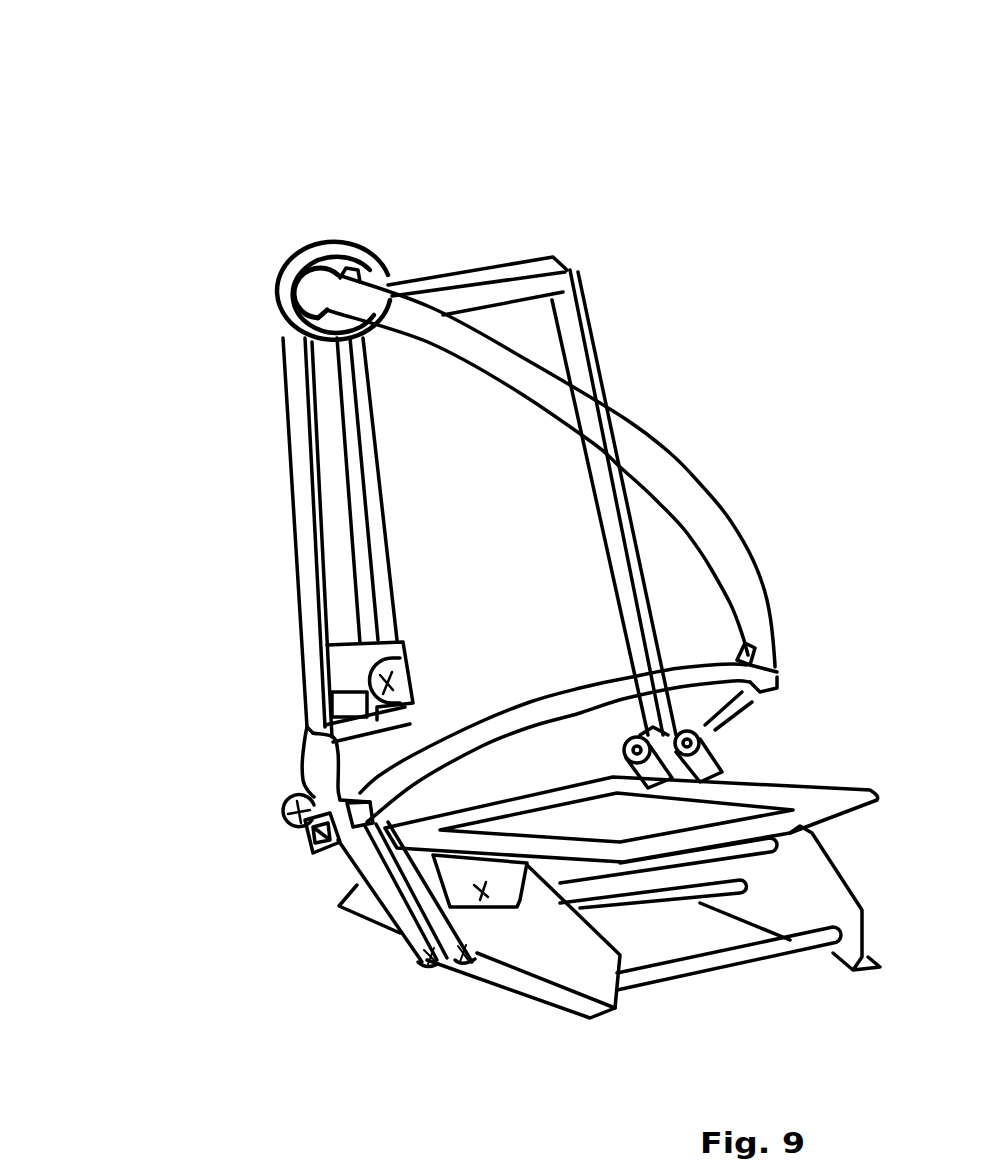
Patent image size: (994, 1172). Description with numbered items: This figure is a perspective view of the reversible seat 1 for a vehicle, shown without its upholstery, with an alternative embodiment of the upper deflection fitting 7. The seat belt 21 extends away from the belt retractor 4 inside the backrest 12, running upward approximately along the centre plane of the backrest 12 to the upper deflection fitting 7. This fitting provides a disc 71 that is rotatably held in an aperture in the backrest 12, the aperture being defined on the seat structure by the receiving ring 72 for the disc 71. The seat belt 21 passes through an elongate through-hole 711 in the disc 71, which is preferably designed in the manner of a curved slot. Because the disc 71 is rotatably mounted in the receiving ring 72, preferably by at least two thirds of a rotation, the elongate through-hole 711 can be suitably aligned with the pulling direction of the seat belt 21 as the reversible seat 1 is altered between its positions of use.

The reversible seat 1 is at (445, 78).
The backrest 12 is at (630, 375).
The seat belt 21 is at (528, 380).
The upper deflection fitting 7 is at (130, 215).
The disc 71 is at (305, 280).
The receiving ring 72 is at (320, 310).
The elongate through-hole 711 is at (350, 280).
The belt retractor 4 is at (367, 676).